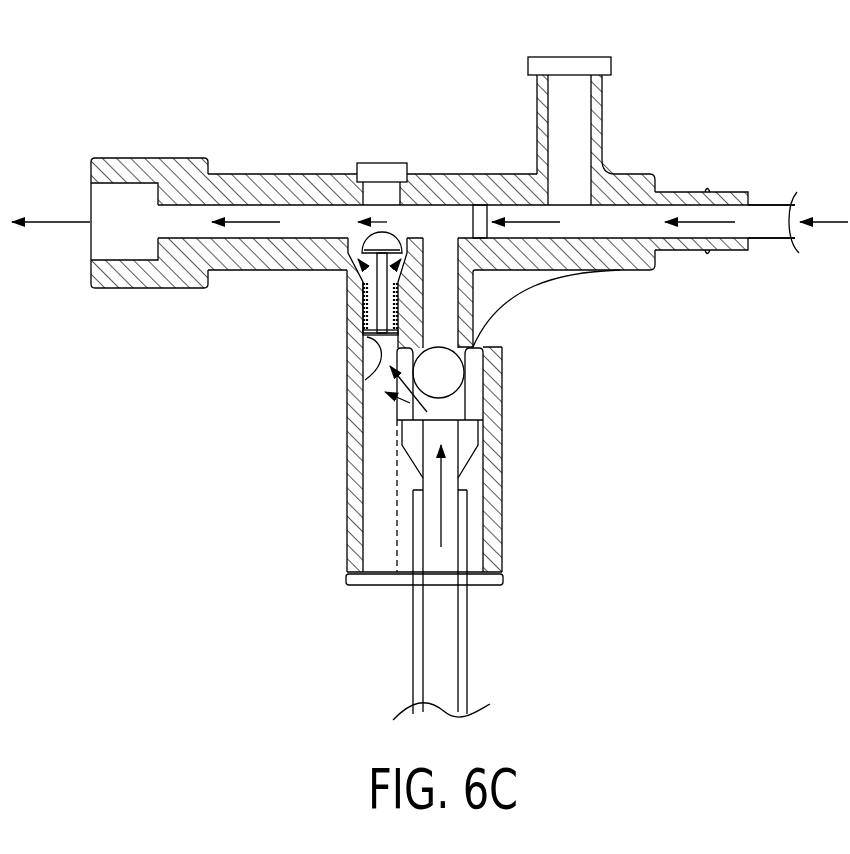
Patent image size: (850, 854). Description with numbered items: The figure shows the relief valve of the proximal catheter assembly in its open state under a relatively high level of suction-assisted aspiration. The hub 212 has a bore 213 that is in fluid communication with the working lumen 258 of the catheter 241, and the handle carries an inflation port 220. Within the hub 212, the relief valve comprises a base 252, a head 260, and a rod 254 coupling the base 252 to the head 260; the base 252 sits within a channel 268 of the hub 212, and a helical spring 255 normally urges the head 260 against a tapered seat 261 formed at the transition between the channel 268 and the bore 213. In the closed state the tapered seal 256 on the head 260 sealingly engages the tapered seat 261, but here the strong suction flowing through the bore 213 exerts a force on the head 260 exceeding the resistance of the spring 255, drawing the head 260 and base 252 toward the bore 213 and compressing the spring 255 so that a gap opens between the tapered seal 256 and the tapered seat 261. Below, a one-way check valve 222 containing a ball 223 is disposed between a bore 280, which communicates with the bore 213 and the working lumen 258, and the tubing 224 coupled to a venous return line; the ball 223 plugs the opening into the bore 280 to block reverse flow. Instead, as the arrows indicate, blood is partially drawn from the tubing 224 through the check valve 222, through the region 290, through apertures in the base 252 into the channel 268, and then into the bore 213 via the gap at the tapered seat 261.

The hub 212 is at (452, 172).
The bore 213 is at (260, 210).
The inflation port 220 is at (612, 72).
The one-way check valve 222 is at (492, 409).
The ball 223 is at (463, 372).
The tubing 224 is at (468, 667).
The catheter 241 is at (763, 238).
The base 252 is at (350, 383).
The rod 254 is at (287, 270).
The helical spring 255 is at (372, 314).
The tapered seal 256 is at (372, 238).
The working lumen 258 is at (770, 210).
The head 260 is at (392, 236).
The tapered seat 261 is at (362, 262).
The channel 268 is at (392, 291).
The bore 280 is at (447, 337).
The region 290 is at (350, 412).